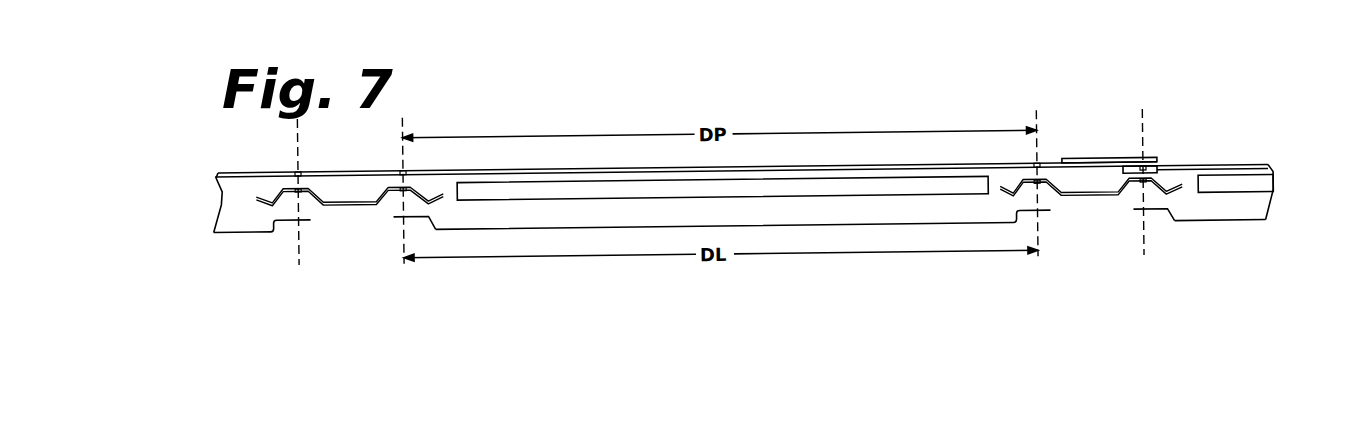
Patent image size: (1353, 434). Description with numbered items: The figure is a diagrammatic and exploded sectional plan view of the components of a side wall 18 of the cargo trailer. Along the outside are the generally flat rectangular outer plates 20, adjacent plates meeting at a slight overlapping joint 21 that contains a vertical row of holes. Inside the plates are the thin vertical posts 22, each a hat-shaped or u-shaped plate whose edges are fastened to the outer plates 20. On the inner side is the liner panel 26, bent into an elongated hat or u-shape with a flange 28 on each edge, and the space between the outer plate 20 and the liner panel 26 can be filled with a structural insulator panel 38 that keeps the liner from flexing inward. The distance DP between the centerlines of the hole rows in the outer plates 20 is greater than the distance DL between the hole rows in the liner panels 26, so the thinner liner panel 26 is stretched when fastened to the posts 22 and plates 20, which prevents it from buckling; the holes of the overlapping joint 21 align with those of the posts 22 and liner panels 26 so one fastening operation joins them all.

The side wall 18 is at (858, 115).
The outer plate 20 is at (1063, 162).
The overlapping joint 21 is at (1160, 143).
The vertical post 22 is at (348, 207).
The liner panel 26 is at (865, 225).
The flange 28 is at (413, 218).
The structural insulator panel 38 is at (505, 193).